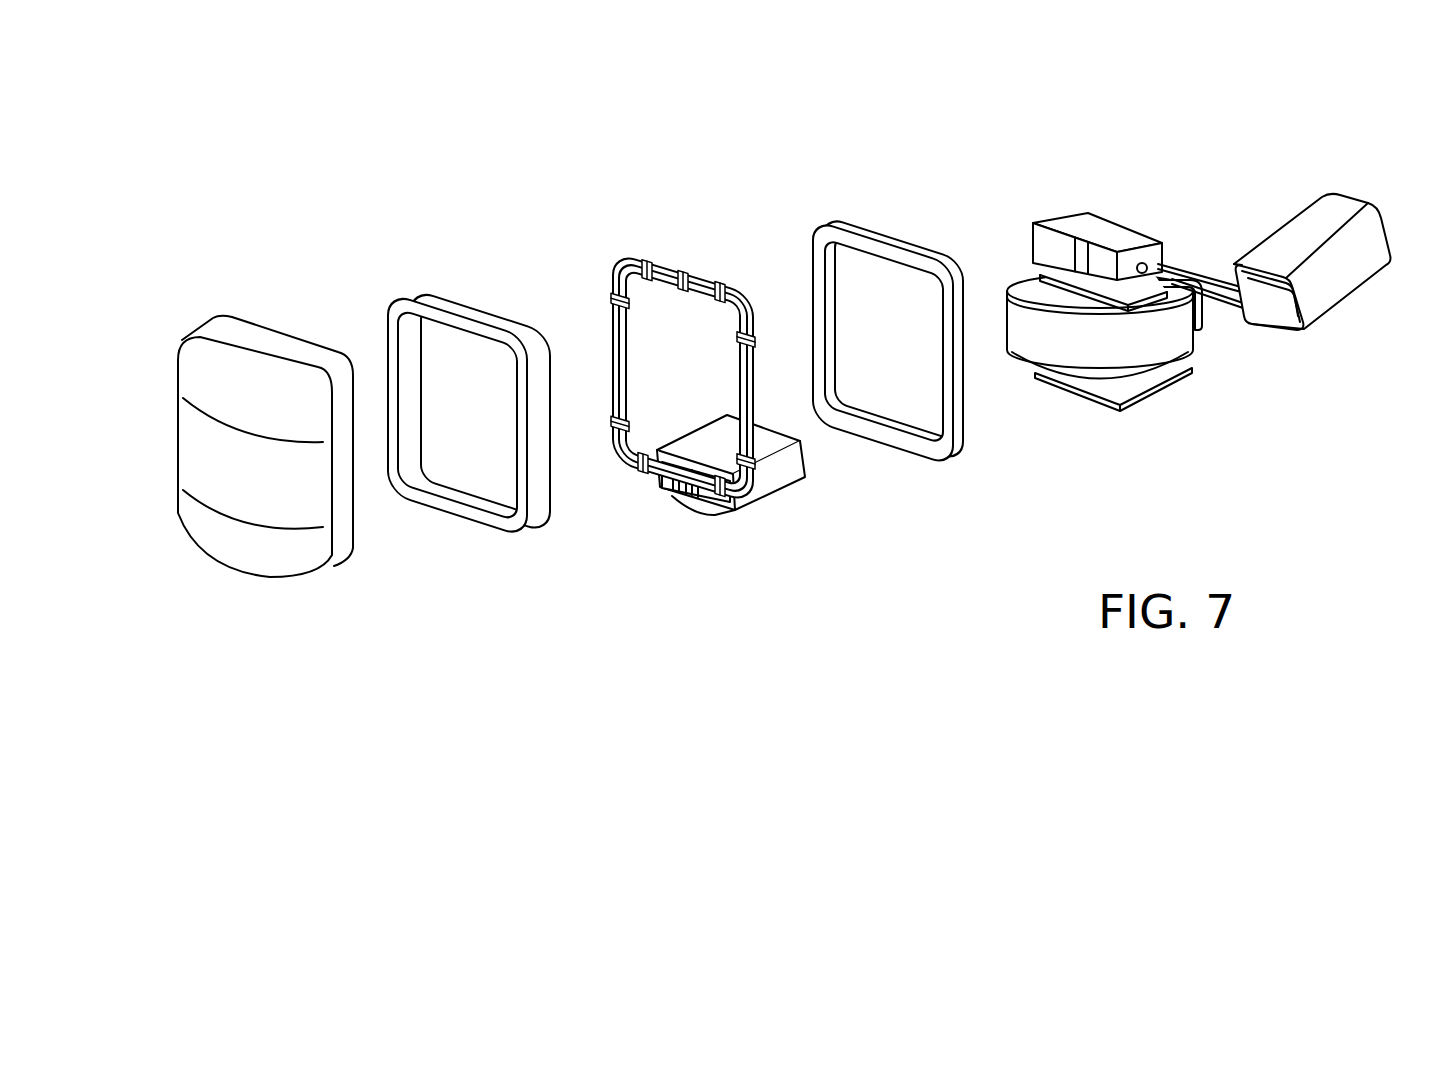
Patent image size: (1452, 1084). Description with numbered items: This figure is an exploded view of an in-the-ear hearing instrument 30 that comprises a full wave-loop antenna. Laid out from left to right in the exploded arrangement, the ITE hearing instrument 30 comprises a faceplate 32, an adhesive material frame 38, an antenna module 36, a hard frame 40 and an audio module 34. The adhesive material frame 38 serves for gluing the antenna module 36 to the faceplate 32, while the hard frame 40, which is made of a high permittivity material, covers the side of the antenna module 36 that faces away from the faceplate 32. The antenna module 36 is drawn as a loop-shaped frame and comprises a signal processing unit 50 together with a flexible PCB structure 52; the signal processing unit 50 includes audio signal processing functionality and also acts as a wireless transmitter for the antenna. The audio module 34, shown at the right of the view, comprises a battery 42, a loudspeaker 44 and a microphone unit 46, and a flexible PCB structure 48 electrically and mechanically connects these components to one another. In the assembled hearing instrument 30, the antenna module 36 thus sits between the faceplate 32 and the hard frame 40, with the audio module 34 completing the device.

The ITE hearing instrument 30 is at (863, 623).
The faceplate 32 is at (213, 567).
The audio module 34 is at (1070, 208).
The antenna module 36 is at (643, 475).
The adhesive material frame 38 is at (458, 527).
The hard frame 40 is at (957, 469).
The battery 42 is at (1090, 342).
The loudspeaker 44 is at (1300, 238).
The microphone unit 46 is at (1165, 262).
The flexible PCB structure 48 is at (1207, 320).
The signal processing unit 50 is at (770, 477).
The flexible PCB structure 52 is at (715, 515).